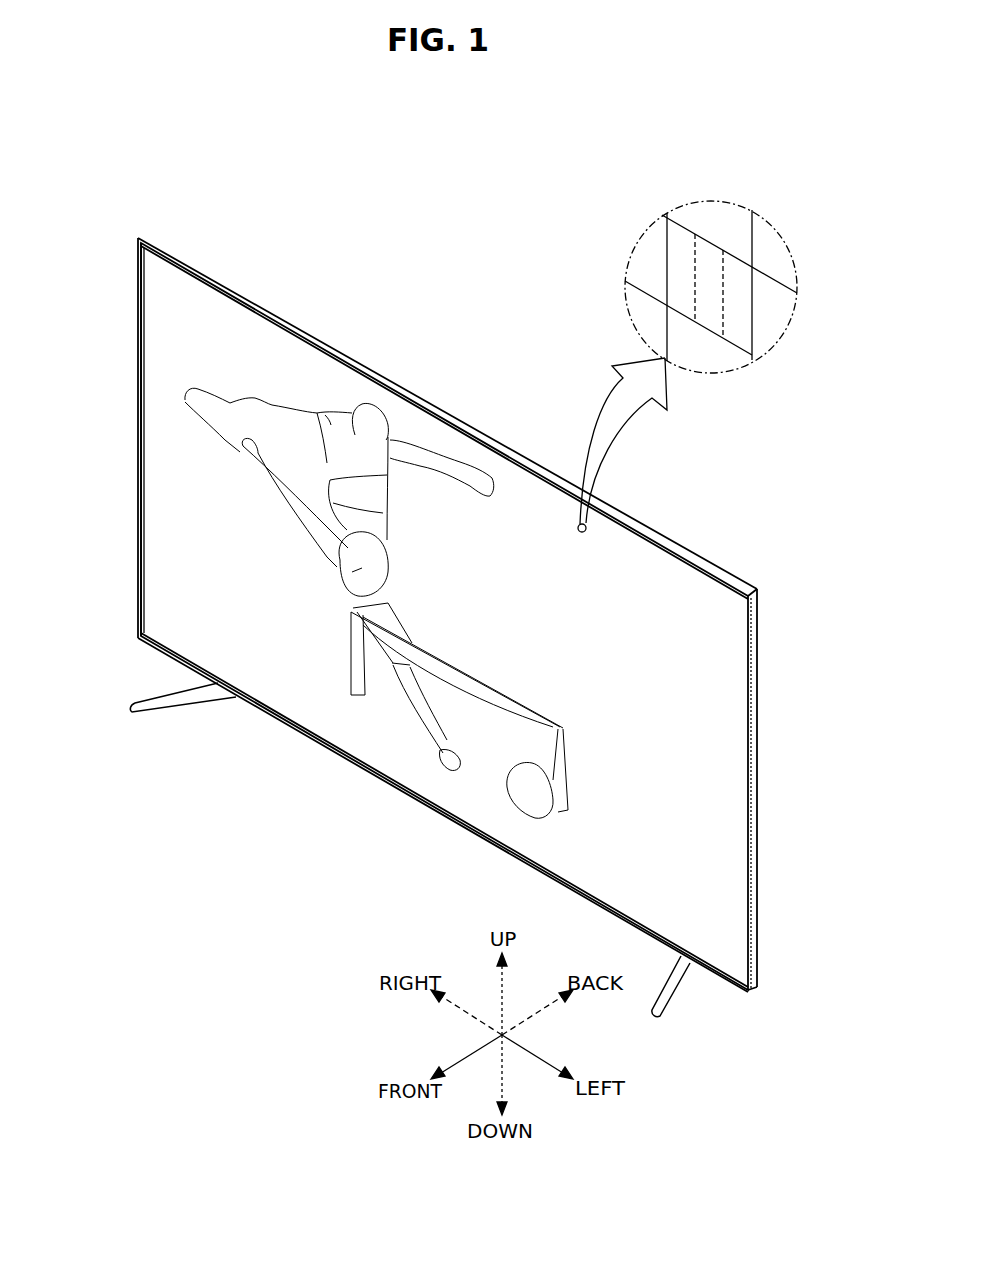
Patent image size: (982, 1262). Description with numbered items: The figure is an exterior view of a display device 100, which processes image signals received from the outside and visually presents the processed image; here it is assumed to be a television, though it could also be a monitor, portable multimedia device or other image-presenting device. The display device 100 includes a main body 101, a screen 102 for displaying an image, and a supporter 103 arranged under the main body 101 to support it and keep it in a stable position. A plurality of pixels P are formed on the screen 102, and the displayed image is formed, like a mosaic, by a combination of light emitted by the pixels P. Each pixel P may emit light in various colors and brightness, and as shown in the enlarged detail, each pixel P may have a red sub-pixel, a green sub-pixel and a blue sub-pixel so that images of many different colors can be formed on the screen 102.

The display device 100 is at (291, 202).
The main body 101 is at (435, 401).
The screen 102 is at (152, 571).
The supporter 103 is at (160, 707).
The pixel P is at (707, 250).